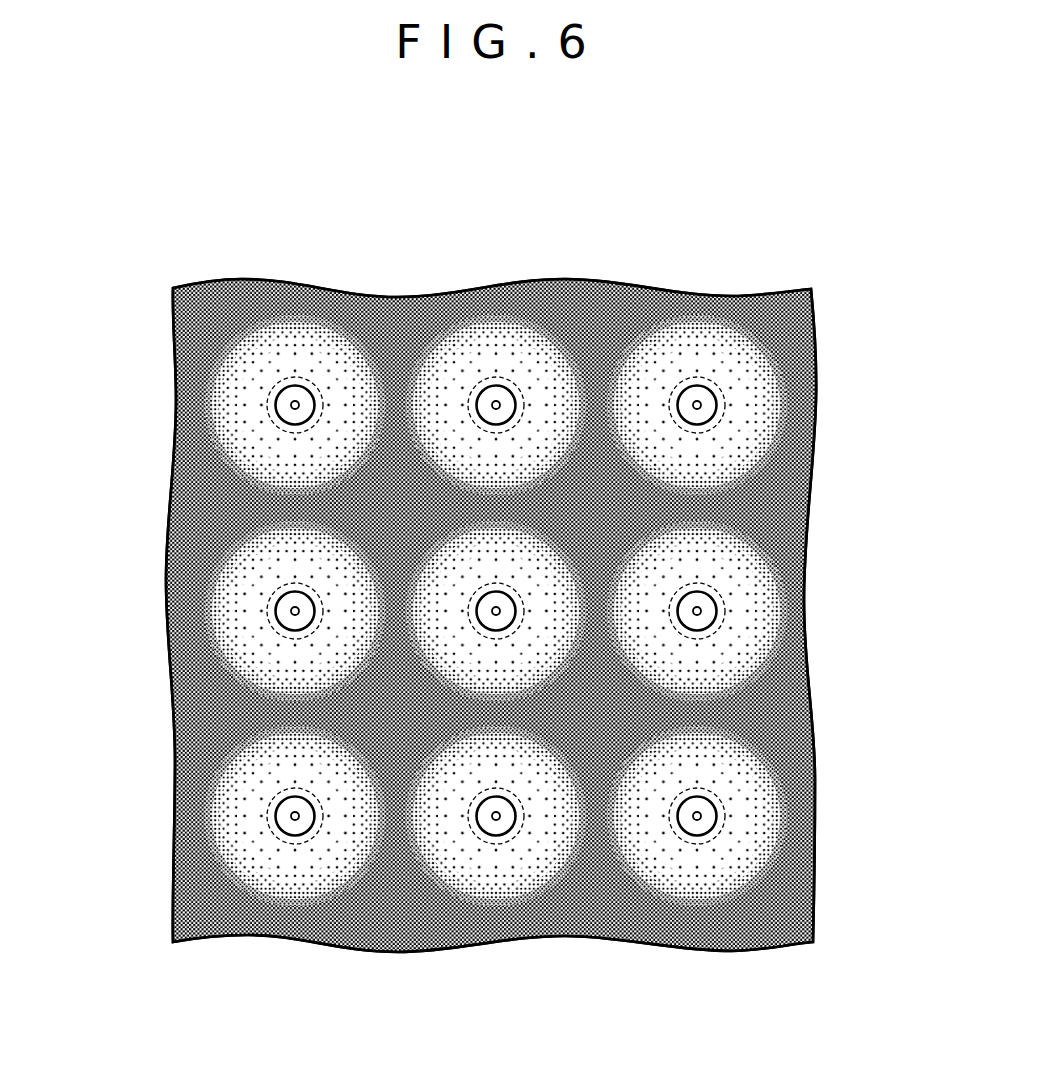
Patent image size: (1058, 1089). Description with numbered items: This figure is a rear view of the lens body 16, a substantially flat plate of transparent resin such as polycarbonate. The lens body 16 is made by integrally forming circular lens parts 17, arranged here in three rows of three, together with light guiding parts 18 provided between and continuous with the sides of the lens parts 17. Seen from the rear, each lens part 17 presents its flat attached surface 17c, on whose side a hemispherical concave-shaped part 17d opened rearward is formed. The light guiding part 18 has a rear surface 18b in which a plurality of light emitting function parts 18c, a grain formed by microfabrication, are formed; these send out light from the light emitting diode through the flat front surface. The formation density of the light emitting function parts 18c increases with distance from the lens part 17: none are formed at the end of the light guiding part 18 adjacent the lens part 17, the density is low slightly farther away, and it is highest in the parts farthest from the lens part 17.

The lens body 16 is at (638, 323).
The lens part 17 is at (500, 387).
The attached surface 17c is at (517, 390).
The concave-shaped part 17d is at (480, 400).
The light guiding part 18 is at (393, 407).
The rear surface 18b is at (433, 347).
The light emitting function parts 18c is at (223, 323).